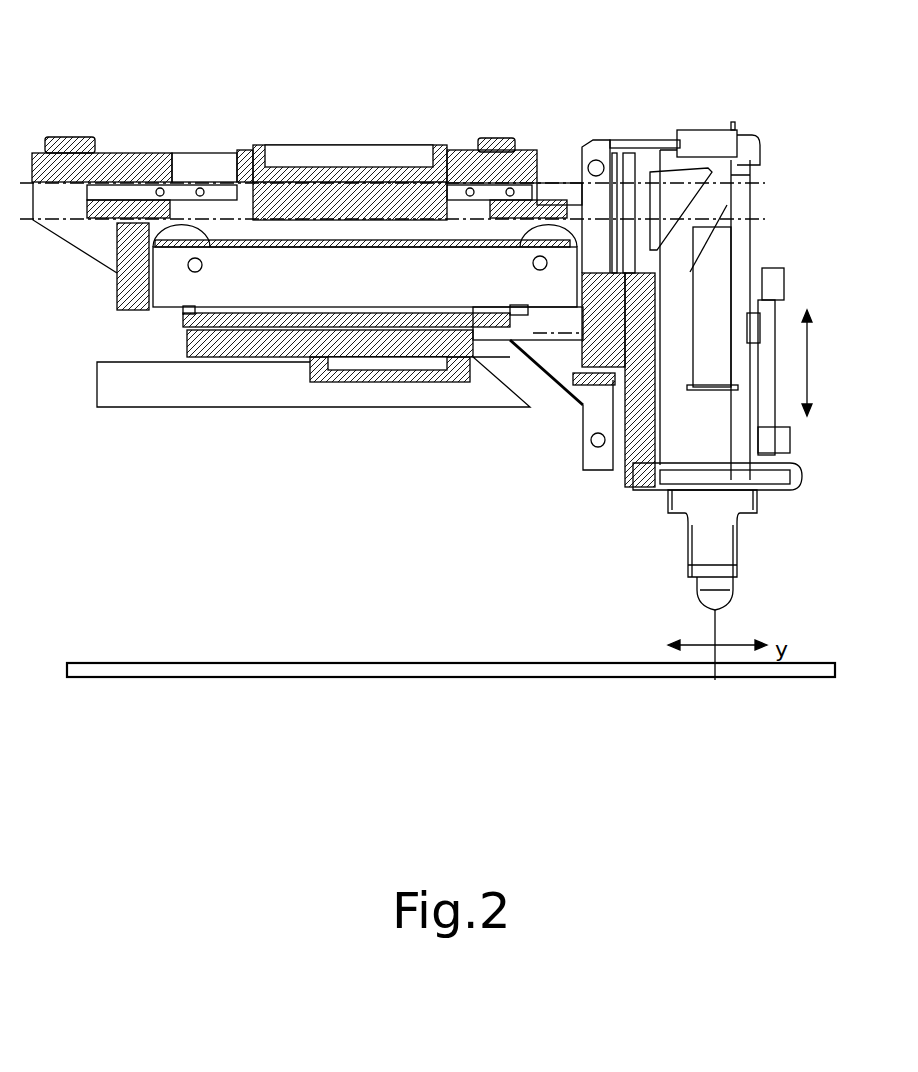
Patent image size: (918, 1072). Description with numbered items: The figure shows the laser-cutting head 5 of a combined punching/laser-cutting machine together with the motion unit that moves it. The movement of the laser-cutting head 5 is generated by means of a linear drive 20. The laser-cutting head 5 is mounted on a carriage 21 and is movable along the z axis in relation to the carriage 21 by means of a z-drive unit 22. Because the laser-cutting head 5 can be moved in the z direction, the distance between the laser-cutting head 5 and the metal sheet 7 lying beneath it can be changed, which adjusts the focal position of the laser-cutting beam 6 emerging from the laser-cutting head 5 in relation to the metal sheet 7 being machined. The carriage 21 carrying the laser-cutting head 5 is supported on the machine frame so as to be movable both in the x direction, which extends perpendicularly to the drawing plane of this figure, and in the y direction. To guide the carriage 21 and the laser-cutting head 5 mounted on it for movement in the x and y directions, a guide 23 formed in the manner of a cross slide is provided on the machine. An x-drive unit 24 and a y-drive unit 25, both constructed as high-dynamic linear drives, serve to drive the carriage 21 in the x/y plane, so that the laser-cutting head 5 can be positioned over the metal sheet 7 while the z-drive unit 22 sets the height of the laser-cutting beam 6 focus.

The laser-cutting head 5 is at (672, 508).
The laser-cutting beam 6 is at (722, 625).
The metal sheet 7 is at (245, 680).
The linear drive 20 is at (482, 112).
The carriage 21 is at (394, 296).
The z-drive unit 22 is at (562, 410).
The guide 23 is at (190, 136).
The x-drive unit 24 is at (324, 404).
The y-drive unit 25 is at (333, 175).